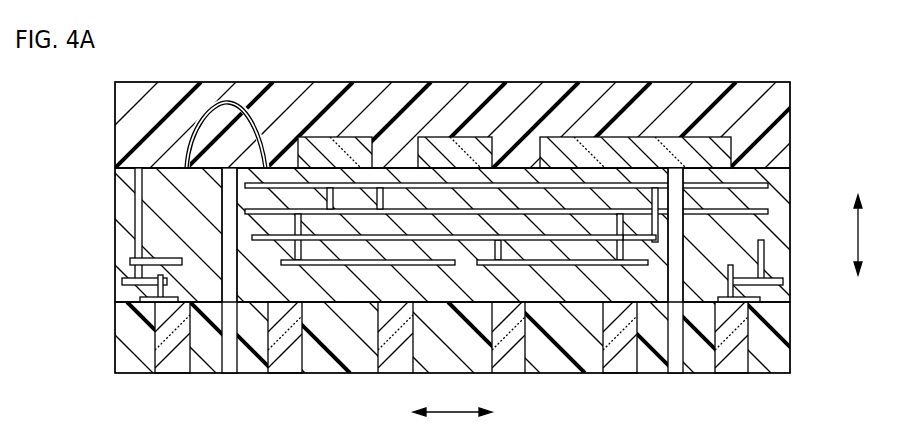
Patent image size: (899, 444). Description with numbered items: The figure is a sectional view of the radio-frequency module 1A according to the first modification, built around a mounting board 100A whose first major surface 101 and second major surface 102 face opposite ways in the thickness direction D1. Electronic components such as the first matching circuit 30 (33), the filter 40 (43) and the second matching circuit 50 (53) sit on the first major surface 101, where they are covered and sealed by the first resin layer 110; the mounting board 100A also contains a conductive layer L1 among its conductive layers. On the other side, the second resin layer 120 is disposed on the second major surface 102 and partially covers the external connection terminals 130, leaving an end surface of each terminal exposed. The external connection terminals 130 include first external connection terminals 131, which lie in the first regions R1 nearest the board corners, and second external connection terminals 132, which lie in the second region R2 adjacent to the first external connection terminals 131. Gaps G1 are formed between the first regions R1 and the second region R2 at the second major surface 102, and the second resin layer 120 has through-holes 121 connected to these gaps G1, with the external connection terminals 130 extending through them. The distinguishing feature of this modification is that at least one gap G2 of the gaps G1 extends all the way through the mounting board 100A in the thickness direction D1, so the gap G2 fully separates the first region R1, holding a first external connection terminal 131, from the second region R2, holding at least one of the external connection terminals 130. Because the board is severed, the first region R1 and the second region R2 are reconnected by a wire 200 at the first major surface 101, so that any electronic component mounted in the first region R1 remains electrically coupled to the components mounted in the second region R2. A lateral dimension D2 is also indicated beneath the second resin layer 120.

The radio-frequency module 1A is at (778, 63).
The first resin layer 110 is at (778, 99).
The first major surface 101 is at (444, 218).
The mounting board 100A is at (780, 200).
The second major surface 102 is at (477, 318).
The second resin layer 120 is at (777, 357).
The wire 200 is at (233, 103).
The second matching circuit 50 is at (333, 131).
The second matching circuit 53 is at (354, 136).
The first matching circuit 30 is at (453, 131).
The first matching circuit 33 is at (448, 136).
The filter 40 is at (630, 131).
The filter 43 is at (634, 146).
The external connection terminal 130 is at (454, 365).
The first external connection terminal 131 is at (451, 335).
The second external connection terminal 132 is at (452, 335).
The through-hole 121 is at (228, 348).
The gap G1 is at (758, 278).
The gap G2 is at (224, 207).
The conductive layer L1 is at (267, 240).
The first region R1 is at (122, 240).
The second region R2 is at (465, 268).
The thickness direction D1 is at (847, 235).
The second distance D2 is at (452, 400).